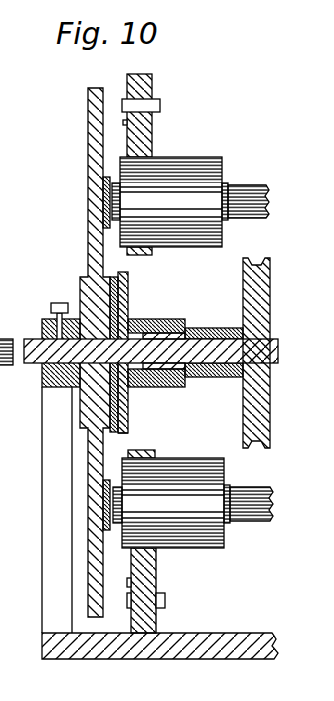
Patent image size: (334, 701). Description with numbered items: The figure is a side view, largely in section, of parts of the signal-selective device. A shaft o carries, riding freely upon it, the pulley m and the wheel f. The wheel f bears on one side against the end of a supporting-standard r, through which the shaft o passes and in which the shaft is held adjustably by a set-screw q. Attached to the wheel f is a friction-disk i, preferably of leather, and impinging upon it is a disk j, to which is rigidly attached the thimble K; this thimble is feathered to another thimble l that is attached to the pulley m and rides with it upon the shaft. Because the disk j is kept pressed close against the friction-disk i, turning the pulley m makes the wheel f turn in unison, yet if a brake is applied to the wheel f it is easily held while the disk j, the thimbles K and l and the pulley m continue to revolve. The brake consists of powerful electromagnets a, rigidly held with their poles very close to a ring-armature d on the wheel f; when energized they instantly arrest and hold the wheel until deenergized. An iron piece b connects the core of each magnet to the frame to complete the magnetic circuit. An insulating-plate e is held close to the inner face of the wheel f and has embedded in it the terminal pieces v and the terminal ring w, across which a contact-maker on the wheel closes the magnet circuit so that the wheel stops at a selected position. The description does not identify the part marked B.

The electromagnet a is at (168, 352).
The piece b is at (247, 353).
The ring-armature d is at (106, 177).
The insulating-plate e is at (153, 139).
The wheel f is at (86, 352).
The friction-disk i is at (130, 431).
The disk j is at (128, 300).
The thimble K is at (180, 352).
The thimble l is at (151, 335).
The pulley m is at (256, 366).
The shaft o is at (13, 366).
The set-screw q is at (59, 303).
The supporting-standard r is at (61, 476).
The terminal pieces v is at (151, 356).
The terminal ring w is at (124, 121).
The base plate B is at (160, 663).